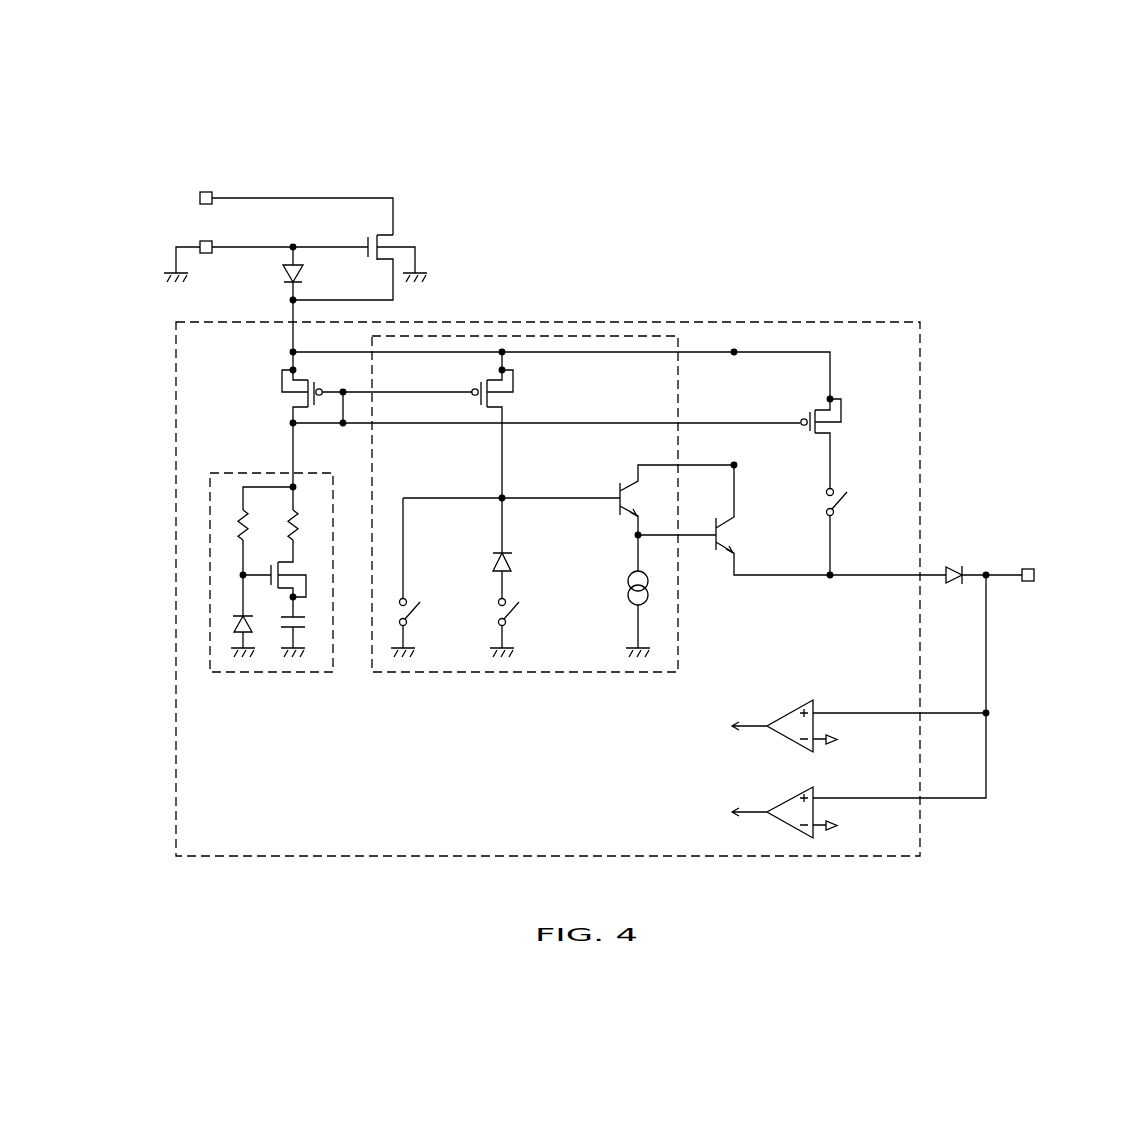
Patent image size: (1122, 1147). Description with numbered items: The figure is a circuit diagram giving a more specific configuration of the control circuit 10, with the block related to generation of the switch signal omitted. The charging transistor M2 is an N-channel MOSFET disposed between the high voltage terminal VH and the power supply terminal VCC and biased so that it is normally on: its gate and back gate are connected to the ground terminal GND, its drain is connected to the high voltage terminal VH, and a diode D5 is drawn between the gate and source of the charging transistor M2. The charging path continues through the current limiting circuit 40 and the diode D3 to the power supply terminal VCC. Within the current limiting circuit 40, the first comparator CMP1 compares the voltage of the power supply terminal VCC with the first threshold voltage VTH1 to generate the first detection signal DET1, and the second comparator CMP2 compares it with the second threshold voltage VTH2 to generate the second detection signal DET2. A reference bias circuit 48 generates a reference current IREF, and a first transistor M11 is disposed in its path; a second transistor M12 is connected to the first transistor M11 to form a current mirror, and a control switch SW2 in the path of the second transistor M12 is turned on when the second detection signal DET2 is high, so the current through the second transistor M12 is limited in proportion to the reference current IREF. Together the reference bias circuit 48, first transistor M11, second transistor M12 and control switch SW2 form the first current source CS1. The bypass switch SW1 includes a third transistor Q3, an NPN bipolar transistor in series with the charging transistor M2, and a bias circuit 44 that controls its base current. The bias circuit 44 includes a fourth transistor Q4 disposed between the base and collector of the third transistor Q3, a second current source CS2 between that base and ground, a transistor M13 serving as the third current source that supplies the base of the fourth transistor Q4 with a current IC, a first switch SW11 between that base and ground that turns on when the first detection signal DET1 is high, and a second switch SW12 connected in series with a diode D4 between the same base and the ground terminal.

The control circuit 10 is at (622, 895).
The current limiting circuit 40 is at (753, 322).
The bias circuit 44 is at (680, 641).
The reference bias circuit 48 is at (271, 672).
The high voltage terminal VH is at (200, 192).
The ground terminal GND is at (200, 241).
The power supply terminal VCC is at (1030, 568).
The charging transistor M2 is at (406, 236).
The first transistor M11 is at (287, 405).
The second transistor M12 is at (810, 405).
The third current source M13 is at (516, 406).
The diode D3 is at (957, 563).
The diode D4 is at (492, 563).
The diode D5 is at (280, 275).
The third transistor Q3 is at (720, 553).
The fourth transistor Q4 is at (618, 520).
The first current source CS1 is at (846, 383).
The second current source CS2 is at (628, 582).
The bypass switch SW1 is at (735, 598).
The control switch SW2 is at (819, 515).
The first switch SW11 is at (417, 620).
The second switch SW12 is at (516, 620).
The first comparator CMP1 is at (782, 717).
The second comparator CMP2 is at (782, 804).
The first detection signal DET1 is at (429, 618).
The second detection signal DET2 is at (529, 618).
The first threshold voltage VTH1 is at (852, 740).
The second threshold voltage VTH2 is at (852, 827).
The reference current IREF is at (287, 451).
The current IC is at (510, 448).